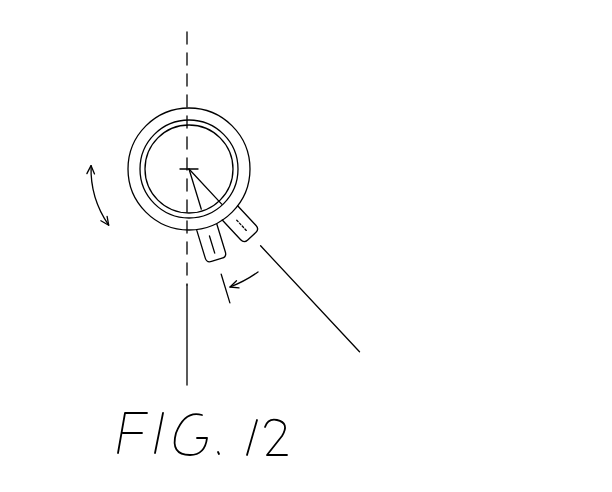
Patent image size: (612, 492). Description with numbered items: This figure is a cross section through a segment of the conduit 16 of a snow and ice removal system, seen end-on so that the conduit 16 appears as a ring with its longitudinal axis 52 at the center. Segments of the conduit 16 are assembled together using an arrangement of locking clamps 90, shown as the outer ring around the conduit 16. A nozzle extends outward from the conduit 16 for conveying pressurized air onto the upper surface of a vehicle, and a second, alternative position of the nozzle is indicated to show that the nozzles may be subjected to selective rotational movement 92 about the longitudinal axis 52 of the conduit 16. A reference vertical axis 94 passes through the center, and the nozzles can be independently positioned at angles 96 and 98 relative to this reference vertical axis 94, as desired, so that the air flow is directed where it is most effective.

The conduit 16 is at (251, 182).
The longitudinal axis 52 is at (189, 169).
The locking clamp 90 is at (232, 121).
The rotational movement 92 is at (96, 198).
The reference vertical axis 94 is at (188, 36).
The angle 96 is at (184, 295).
The angle 98 is at (308, 304).